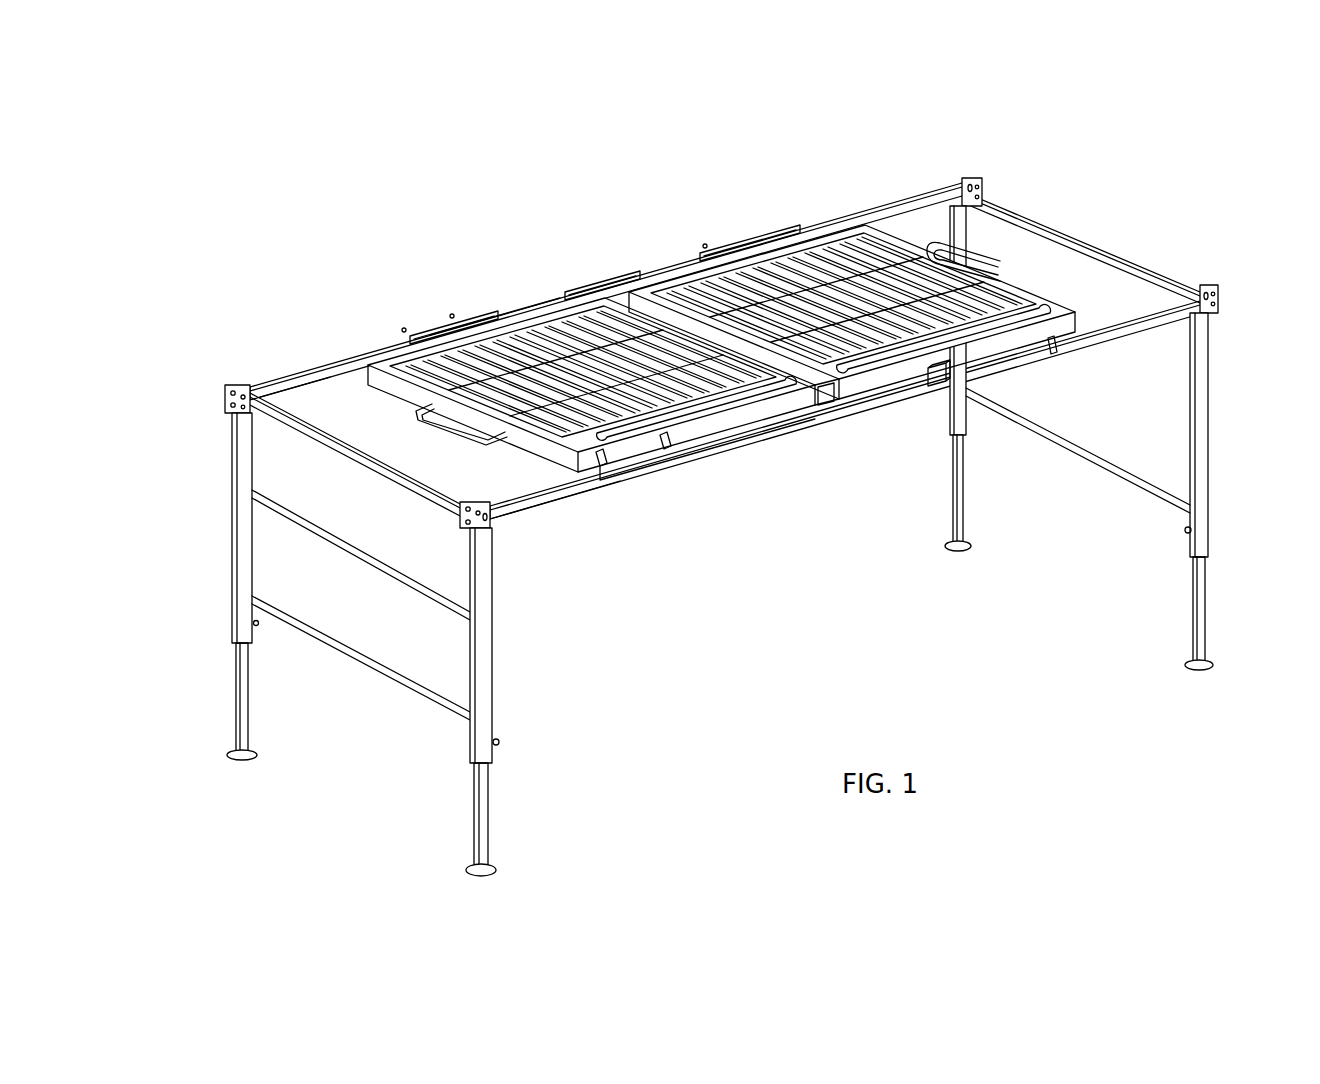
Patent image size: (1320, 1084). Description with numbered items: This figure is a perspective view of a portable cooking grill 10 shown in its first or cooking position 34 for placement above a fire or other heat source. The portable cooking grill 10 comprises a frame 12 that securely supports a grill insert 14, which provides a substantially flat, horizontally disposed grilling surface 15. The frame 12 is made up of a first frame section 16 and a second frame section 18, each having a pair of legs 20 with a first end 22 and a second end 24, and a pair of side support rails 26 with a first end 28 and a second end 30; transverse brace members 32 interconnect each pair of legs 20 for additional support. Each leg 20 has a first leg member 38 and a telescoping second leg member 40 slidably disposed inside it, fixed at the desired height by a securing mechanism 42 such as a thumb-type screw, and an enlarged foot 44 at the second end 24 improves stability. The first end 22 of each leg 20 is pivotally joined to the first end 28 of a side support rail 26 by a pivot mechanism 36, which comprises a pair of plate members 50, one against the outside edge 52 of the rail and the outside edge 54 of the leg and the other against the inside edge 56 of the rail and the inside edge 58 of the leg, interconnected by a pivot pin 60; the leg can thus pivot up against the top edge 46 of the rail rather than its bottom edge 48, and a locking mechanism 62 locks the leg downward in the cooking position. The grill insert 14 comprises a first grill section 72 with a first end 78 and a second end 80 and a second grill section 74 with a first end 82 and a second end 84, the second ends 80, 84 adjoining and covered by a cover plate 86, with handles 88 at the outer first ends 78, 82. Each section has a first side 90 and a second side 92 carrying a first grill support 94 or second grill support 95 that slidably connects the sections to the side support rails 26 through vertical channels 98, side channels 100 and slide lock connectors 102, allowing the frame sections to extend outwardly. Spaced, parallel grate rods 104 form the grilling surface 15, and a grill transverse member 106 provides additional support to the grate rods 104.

The portable cooking grill 10 is at (1103, 170).
The frame 12 is at (225, 462).
The grill insert 14 is at (378, 382).
The grilling surface 15 is at (746, 332).
The first frame section 16 is at (575, 572).
The second frame section 18 is at (1077, 482).
The legs 20 is at (230, 526).
The first end of leg 22 is at (225, 418).
The second end of leg 24 is at (228, 746).
The side support rails 26 is at (1120, 300).
The first end of side support rail 28 is at (245, 380).
The second end of side support rail 30 is at (497, 303).
The transverse brace members 32 is at (342, 652).
The first or cooking position 34 is at (1095, 234).
The pivot mechanism 36 is at (462, 506).
The first leg member 38 is at (493, 608).
The second leg member 40 is at (492, 809).
The securing mechanism 42 is at (500, 742).
The foot 44 is at (498, 871).
The top edge of side support rail 46 is at (922, 190).
The bottom edge of side support rail 48 is at (292, 402).
The plate members 50 is at (495, 524).
The outside edge of side support rail 52 is at (1090, 335).
The outside edge of leg 54 is at (1205, 412).
The inside edge of side support rail 56 is at (966, 182).
The inside edge of leg 58 is at (968, 212).
The pivot pin 60 is at (1215, 290).
The locking mechanism 62 is at (1216, 315).
The first grill section 72 is at (582, 335).
The second grill section 74 is at (819, 290).
The first end of first grill section 78 is at (525, 452).
The second end of first grill section 80 is at (824, 407).
The first end of second grill section 82 is at (1040, 288).
The second end of second grill section 84 is at (840, 397).
The cover plate 86 is at (615, 298).
The handles 88 is at (440, 432).
The first side of grill section 90 is at (590, 300).
The second side of grill section 92 is at (601, 463).
The first grill support 94 is at (666, 443).
The second grill support 95 is at (910, 392).
The vertical channels 98 is at (948, 362).
The side channels 100 is at (793, 418).
The slide lock connectors 102 is at (1052, 350).
The grate rods 104 is at (470, 358).
The grill transverse member 106 is at (655, 355).